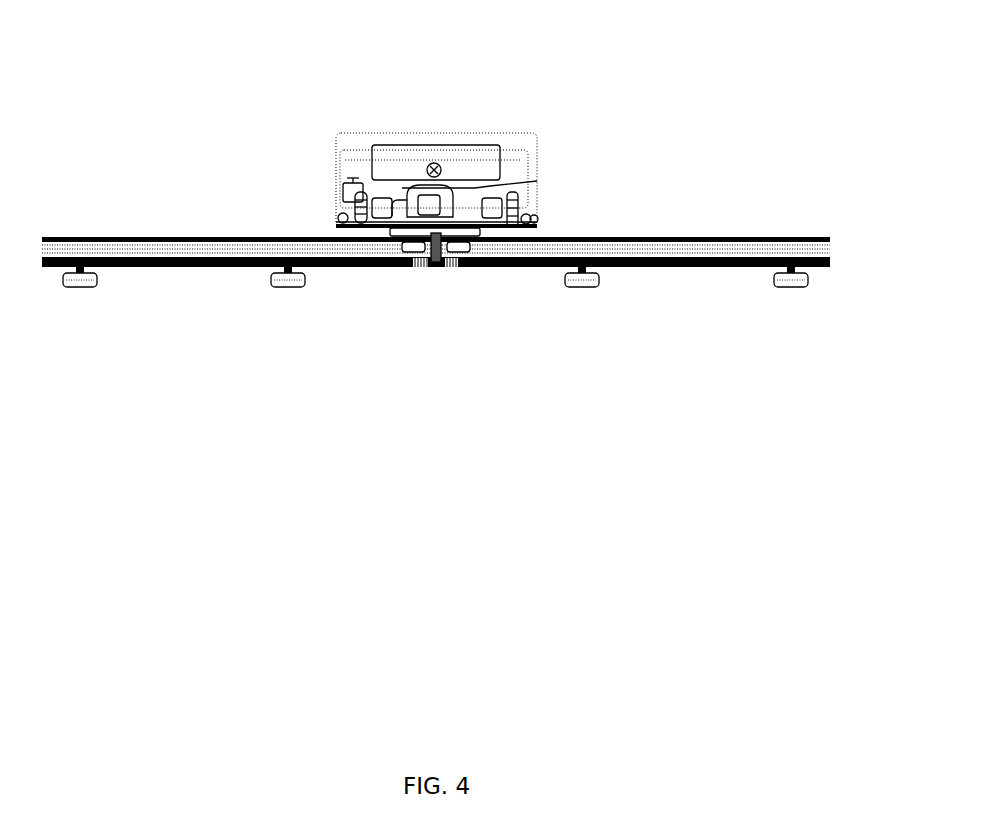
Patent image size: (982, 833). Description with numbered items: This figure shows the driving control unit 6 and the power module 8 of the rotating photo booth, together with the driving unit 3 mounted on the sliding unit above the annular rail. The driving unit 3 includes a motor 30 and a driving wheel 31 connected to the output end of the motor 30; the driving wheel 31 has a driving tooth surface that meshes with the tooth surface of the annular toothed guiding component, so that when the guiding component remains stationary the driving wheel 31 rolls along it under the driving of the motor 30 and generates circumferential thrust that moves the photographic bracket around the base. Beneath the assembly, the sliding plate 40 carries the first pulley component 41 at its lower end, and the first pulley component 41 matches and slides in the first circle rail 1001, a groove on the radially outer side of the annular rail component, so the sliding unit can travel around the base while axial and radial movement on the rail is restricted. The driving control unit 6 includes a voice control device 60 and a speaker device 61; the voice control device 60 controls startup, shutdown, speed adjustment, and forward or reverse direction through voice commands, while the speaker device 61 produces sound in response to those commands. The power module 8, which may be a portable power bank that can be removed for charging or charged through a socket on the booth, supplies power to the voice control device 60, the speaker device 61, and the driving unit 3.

The first circle rail 1001 is at (190, 248).
The driving unit 3 is at (90, 315).
The motor 30 is at (433, 208).
The driving wheel 31 is at (435, 268).
The sliding plate 40 is at (537, 230).
The first pulley component 41 is at (465, 265).
The driving control unit 6 is at (540, 379).
The voice control device 60 is at (488, 186).
The speaker device 61 is at (337, 188).
The power module 8 is at (480, 158).